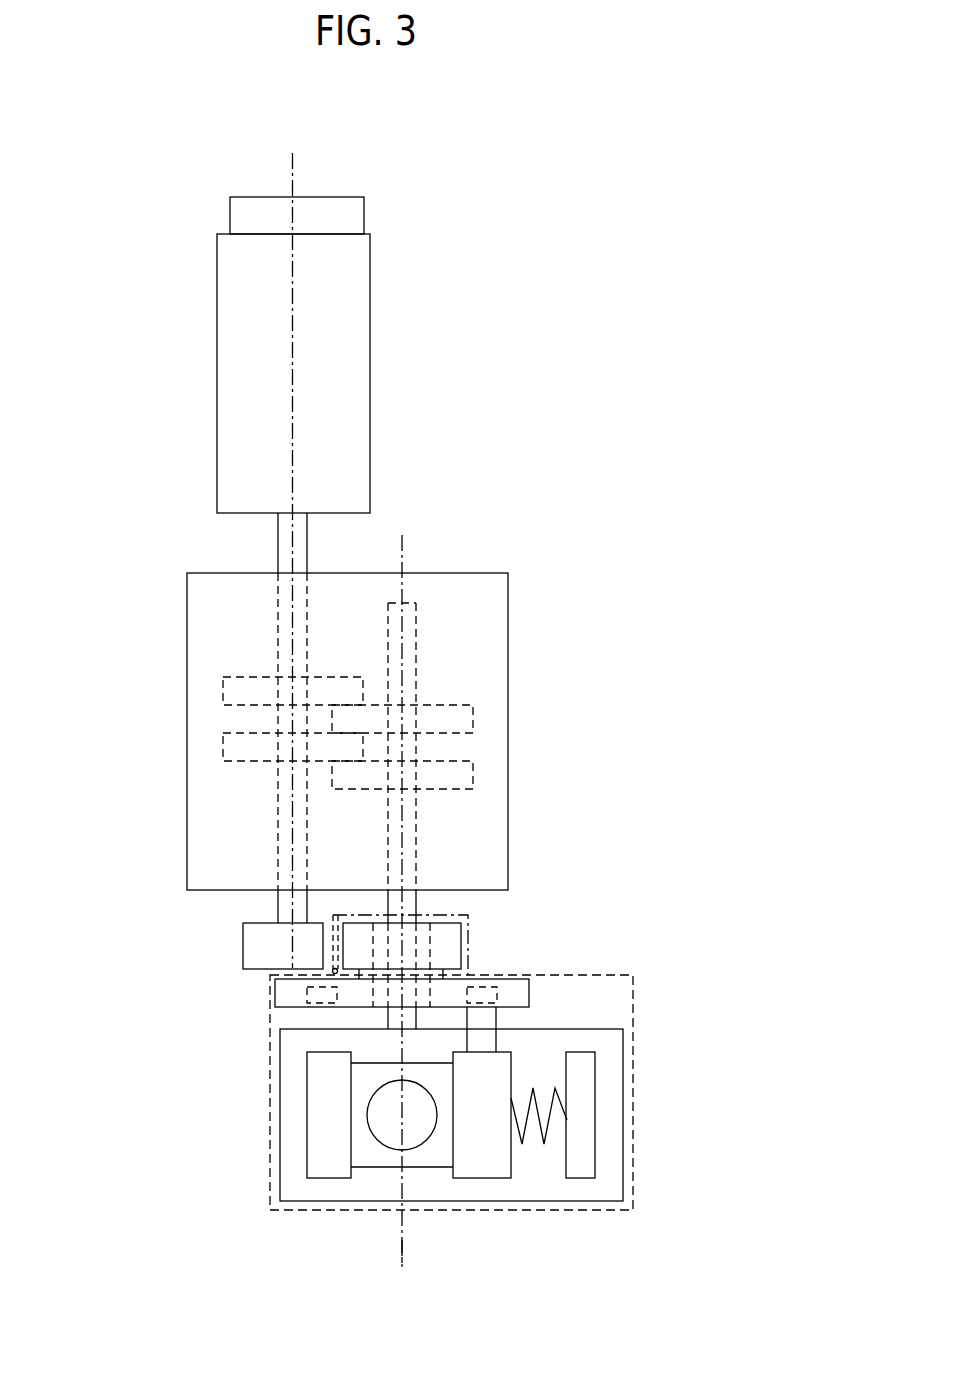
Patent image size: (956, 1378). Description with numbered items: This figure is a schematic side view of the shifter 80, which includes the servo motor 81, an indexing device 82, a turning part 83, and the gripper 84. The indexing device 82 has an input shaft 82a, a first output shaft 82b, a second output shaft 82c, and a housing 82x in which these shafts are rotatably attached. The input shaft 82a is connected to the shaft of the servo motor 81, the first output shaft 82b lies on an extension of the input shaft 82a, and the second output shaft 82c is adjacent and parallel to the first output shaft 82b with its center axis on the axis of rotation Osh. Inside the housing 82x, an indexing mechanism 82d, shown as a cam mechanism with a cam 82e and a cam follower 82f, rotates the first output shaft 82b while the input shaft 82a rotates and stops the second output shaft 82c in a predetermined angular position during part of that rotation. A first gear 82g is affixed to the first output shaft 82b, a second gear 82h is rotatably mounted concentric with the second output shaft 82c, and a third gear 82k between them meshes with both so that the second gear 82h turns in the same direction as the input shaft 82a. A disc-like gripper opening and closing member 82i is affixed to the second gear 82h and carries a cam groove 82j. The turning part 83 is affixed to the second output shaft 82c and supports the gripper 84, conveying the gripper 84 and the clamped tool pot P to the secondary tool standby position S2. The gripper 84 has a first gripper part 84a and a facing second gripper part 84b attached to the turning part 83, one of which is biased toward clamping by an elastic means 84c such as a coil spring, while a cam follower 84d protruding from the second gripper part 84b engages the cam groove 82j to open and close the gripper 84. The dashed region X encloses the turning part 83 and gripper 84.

The shifter 80 is at (550, 243).
The servo motor 81 is at (356, 363).
The indexing device 82 is at (450, 560).
The input shaft 82a is at (283, 543).
The first output shaft 82b is at (283, 908).
The second output shaft 82c is at (408, 908).
The indexing mechanism 82d is at (240, 663).
The cam 82e is at (223, 697).
The cam follower 82f is at (472, 713).
The first gear 82g is at (250, 948).
The second gear 82h is at (448, 942).
The gripper opening and closing member 82i is at (515, 993).
The cam groove 82j is at (283, 995).
The third gear 82k is at (332, 922).
The housing 82x is at (500, 662).
The turning part 83 is at (293, 1158).
The gripper 84 is at (419, 1180).
The first gripper part 84a is at (322, 1107).
The second gripper part 84b is at (481, 1165).
The elastic means 84c is at (560, 1103).
The cam follower 84d is at (487, 1022).
The tool pot P is at (368, 1148).
The axis of rotation Osh is at (400, 1245).
The secondary tool standby position S2 is at (697, 1147).
The region X is at (632, 1182).